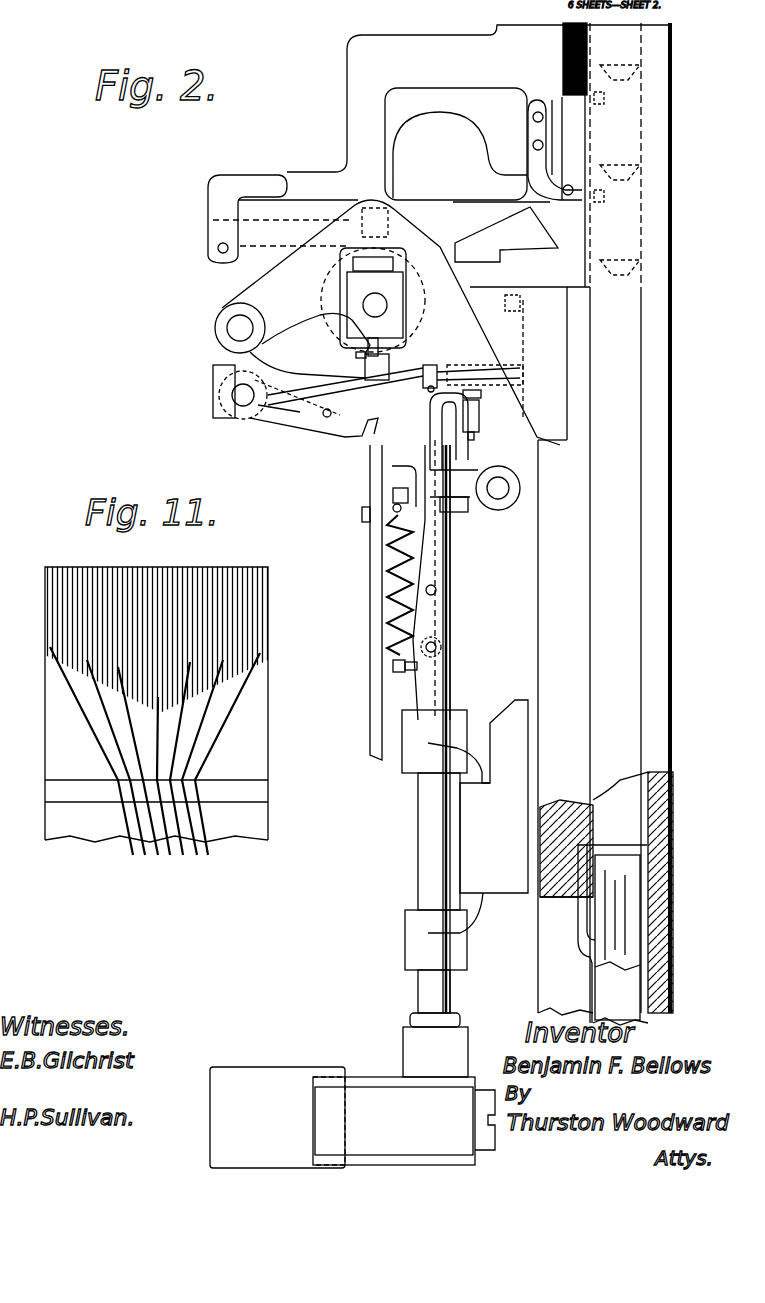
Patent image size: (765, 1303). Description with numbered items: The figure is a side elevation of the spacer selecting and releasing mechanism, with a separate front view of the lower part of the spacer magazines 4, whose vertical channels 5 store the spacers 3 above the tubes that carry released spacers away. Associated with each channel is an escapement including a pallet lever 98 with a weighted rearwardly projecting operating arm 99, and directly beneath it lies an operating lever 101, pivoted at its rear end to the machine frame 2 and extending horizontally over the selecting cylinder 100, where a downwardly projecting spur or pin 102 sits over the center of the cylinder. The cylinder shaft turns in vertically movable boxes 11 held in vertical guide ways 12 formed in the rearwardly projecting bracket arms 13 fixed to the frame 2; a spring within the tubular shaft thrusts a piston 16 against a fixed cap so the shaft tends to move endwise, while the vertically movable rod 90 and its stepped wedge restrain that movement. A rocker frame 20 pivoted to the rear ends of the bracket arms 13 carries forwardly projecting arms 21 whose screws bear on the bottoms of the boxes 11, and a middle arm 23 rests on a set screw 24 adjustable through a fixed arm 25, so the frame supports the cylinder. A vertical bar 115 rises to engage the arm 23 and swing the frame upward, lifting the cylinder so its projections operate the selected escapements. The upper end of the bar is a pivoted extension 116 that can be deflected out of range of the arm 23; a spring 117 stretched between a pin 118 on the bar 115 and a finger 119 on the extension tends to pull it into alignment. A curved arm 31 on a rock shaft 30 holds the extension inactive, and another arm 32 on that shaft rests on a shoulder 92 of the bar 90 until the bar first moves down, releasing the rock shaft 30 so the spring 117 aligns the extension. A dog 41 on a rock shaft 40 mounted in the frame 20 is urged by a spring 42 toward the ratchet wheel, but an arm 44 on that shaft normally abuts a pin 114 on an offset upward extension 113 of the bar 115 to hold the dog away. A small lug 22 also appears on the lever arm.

In FIG. 2, the frame 2 is at (530, 554).
In FIG. 2, the spacers 3 is at (617, 170).
In FIG. 2, the spacer magazines 4 is at (612, 934).
In FIG. 11, the spacer magazines 4 is at (156, 711).
In FIG. 2, the vertical channels 5 is at (637, 518).
In FIG. 2, the vertically movable boxes 11 is at (375, 305).
In FIG. 2, the vertical guide ways 12 is at (352, 265).
In FIG. 2, the bracket arms 13 is at (387, 322).
In FIG. 2, the piston 16 is at (377, 336).
In FIG. 2, the rocker frame 20 is at (240, 348).
In FIG. 2, the forwardly projecting arms 21 is at (310, 345).
In FIG. 2, the lug 22 is at (349, 355).
In FIG. 2, the arm 23 is at (485, 357).
In FIG. 2, the set screw 24 is at (480, 395).
In FIG. 2, the fixed arm 25 is at (476, 418).
In FIG. 2, the rock shaft 30 is at (498, 500).
In FIG. 2, the curved arm 31 is at (428, 441).
In FIG. 2, the arm 32 is at (390, 467).
In FIG. 2, the rock shaft 40 is at (243, 395).
In FIG. 2, the dog 41 is at (290, 425).
In FIG. 2, the spring 42 is at (325, 418).
In FIG. 2, the arm 44 is at (388, 363).
In FIG. 2, the vertically movable rod 90 is at (370, 632).
In FIG. 2, the shoulder 92 is at (392, 492).
In FIG. 2, the pallet lever 98 is at (555, 150).
In FIG. 2, the operating arm 99 is at (456, 144).
In FIG. 2, the selecting cylinder 100 is at (425, 300).
In FIG. 2, the operating lever 101 is at (506, 234).
In FIG. 2, the spur or pin 102 is at (380, 262).
In FIG. 2, the upward extension 113 is at (425, 418).
In FIG. 2, the pin 114 is at (433, 385).
In FIG. 2, the vertical bar 115 is at (444, 677).
In FIG. 2, the extension 116 is at (436, 566).
In FIG. 2, the spring 117 is at (388, 580).
In FIG. 2, the pin 118 is at (392, 667).
In FIG. 2, the finger 119 is at (396, 512).